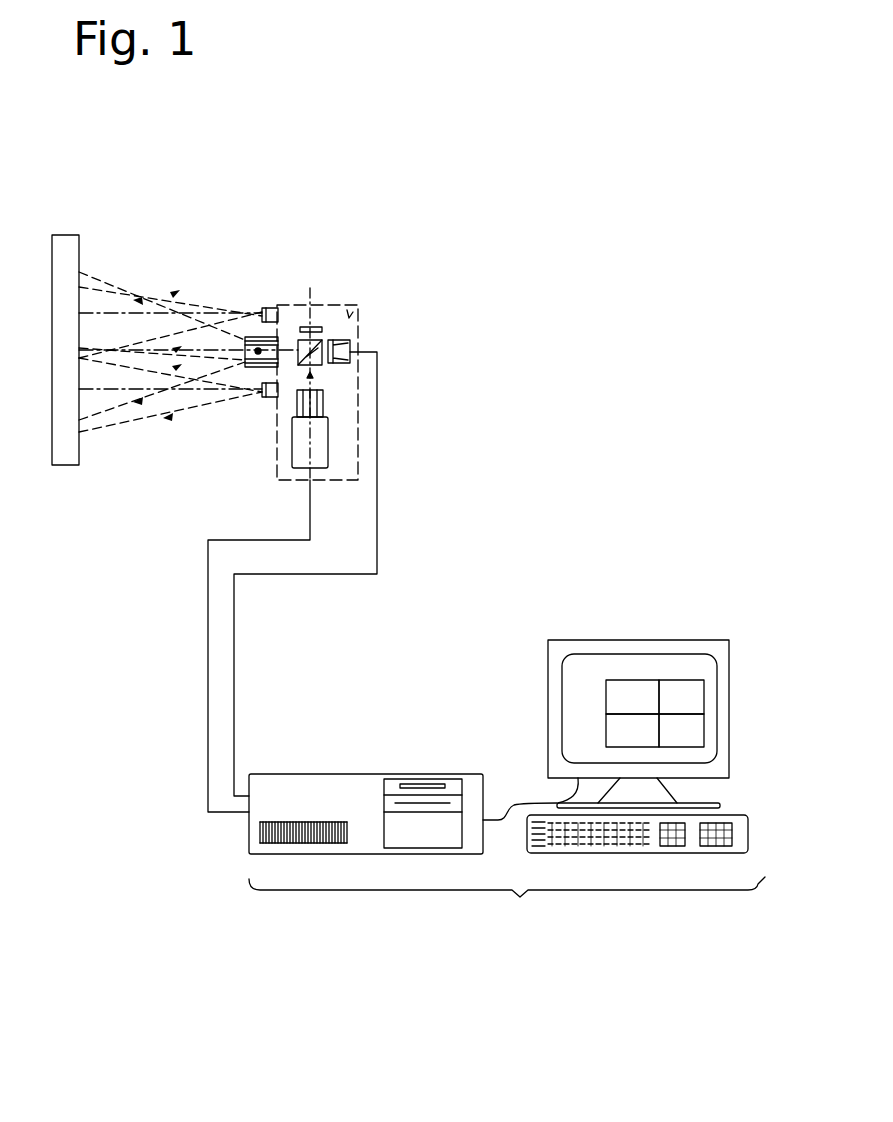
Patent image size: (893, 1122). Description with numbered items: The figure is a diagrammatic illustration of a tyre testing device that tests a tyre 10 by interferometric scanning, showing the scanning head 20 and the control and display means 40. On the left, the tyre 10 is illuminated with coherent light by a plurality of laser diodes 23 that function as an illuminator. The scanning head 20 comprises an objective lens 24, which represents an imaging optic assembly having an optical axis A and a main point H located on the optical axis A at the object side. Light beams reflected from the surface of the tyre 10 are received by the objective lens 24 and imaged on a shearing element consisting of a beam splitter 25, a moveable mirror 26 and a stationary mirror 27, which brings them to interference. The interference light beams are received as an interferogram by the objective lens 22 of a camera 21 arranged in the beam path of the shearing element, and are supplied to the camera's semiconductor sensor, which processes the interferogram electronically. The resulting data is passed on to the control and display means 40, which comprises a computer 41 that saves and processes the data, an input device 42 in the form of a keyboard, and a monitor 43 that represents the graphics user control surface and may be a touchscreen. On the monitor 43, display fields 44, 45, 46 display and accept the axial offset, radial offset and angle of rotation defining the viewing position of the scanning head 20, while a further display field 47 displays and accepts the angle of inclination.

The tyre 10 is at (72, 247).
The optical axis A is at (184, 350).
The scanning head 20 is at (347, 300).
The camera 21 is at (302, 457).
The objective lens 22 is at (297, 403).
The laser diodes 23 is at (267, 307).
The objective lens 24 is at (243, 343).
The beam splitter 25 is at (350, 352).
The moveable mirror 26 is at (343, 340).
The stationary mirror 27 is at (322, 327).
The main point H is at (260, 351).
The control and display means 40 is at (507, 909).
The computer 41 is at (353, 790).
The input device 42 is at (740, 830).
The monitor 43 is at (593, 706).
The display field 44 is at (678, 700).
The display field 45 is at (630, 700).
The display field 46 is at (627, 730).
The display field 47 is at (688, 730).